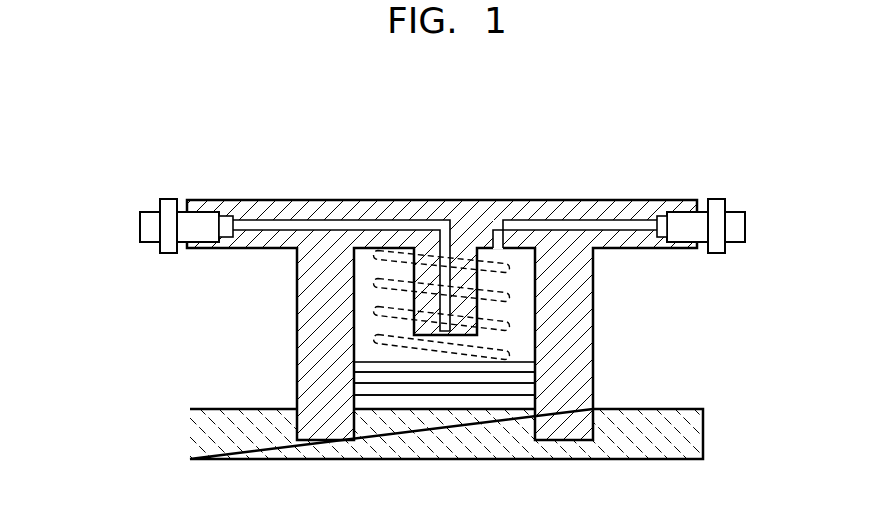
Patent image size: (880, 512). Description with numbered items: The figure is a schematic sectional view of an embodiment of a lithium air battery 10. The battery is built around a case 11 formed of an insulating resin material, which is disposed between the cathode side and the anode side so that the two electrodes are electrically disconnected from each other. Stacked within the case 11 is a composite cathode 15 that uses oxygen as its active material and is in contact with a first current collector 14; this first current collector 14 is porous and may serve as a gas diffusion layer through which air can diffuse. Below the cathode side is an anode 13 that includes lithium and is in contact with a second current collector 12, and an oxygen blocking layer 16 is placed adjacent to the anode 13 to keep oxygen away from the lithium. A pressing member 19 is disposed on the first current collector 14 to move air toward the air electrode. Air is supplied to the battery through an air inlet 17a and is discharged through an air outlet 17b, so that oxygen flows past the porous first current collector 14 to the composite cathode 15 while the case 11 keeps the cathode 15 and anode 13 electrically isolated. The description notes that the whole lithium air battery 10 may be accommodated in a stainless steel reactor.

The lithium air battery 10 is at (680, 154).
The case 11 is at (297, 297).
The second current collector 12 is at (697, 433).
The anode 13 is at (527, 406).
The first current collector 14 is at (523, 366).
The composite cathode 15 is at (525, 380).
The oxygen blocking layer 16 is at (527, 394).
The air inlet 17a is at (119, 225).
The air outlet 17b is at (757, 225).
The pressing member 19 is at (507, 300).